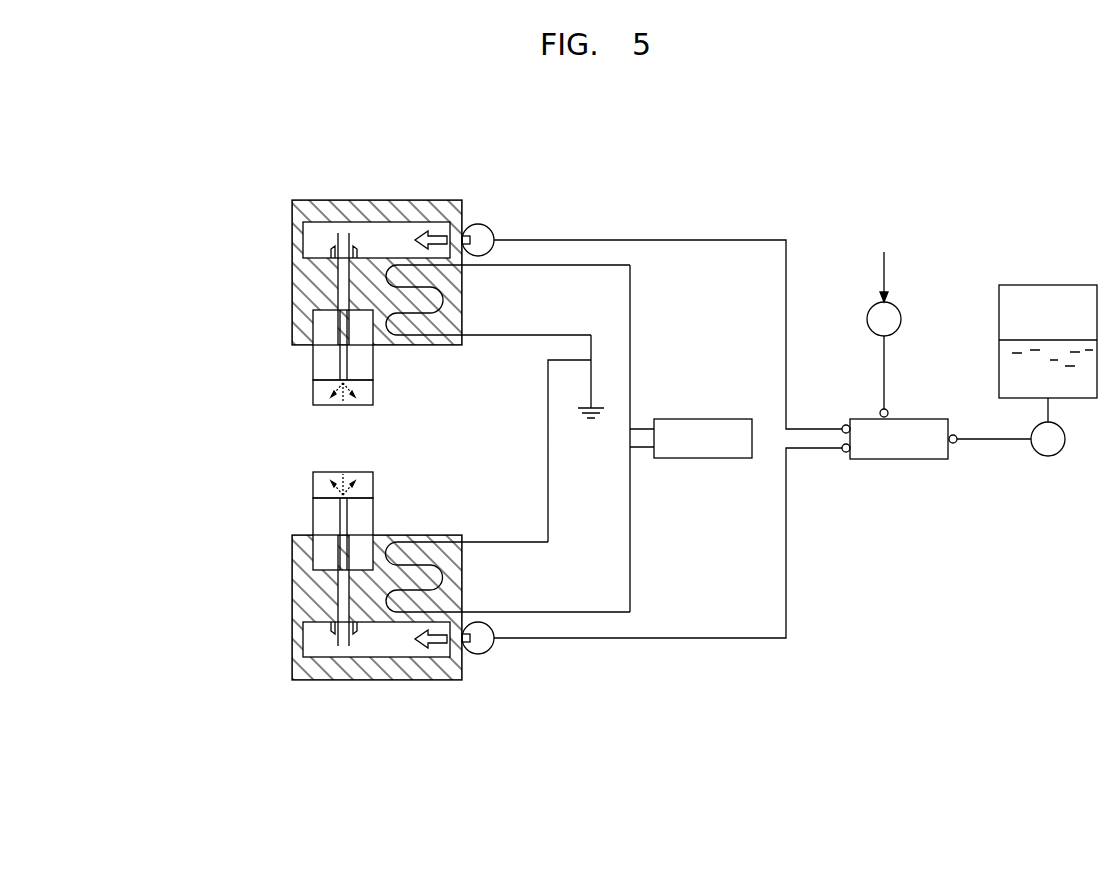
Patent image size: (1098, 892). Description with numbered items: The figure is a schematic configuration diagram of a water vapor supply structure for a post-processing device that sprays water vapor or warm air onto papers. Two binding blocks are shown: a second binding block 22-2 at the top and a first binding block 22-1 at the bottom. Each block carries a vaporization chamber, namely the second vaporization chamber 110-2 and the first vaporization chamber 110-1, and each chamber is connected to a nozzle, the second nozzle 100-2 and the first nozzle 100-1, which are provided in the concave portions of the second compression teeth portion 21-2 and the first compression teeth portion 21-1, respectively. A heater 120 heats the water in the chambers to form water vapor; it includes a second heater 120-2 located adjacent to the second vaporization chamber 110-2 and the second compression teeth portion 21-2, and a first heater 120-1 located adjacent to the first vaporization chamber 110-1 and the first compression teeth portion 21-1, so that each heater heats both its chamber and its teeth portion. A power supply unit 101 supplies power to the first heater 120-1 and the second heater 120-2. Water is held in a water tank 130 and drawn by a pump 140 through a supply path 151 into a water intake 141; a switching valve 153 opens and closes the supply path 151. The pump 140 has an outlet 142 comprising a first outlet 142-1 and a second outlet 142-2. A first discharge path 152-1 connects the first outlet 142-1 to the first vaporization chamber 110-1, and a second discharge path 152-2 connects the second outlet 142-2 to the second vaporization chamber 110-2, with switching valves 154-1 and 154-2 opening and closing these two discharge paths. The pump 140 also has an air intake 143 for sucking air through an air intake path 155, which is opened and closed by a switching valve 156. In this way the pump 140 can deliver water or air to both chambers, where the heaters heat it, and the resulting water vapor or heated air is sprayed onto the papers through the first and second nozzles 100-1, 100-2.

The second binding block 22-2 is at (335, 269).
The first binding block 22-1 is at (301, 608).
The second vaporization chamber 110-2 is at (372, 232).
The first vaporization chamber 110-1 is at (380, 645).
The second nozzle 100-2 is at (343, 355).
The first nozzle 100-1 is at (343, 517).
The second compression teeth portion 21-2 is at (313, 392).
The first compression teeth portion 21-1 is at (313, 485).
The heater 120 is at (508, 438).
The second heater 120-2 is at (419, 340).
The first heater 120-1 is at (508, 532).
The power supply unit 101 is at (704, 418).
The switching valve 154-2 is at (490, 228).
The switching valve 154-1 is at (490, 655).
The second discharge path 152-2 is at (745, 236).
The first discharge path 152-1 is at (740, 641).
The pump 140 is at (917, 418).
The outlet 142 is at (874, 500).
The first outlet 142-1 is at (852, 458).
The second outlet 142-2 is at (839, 488).
The air intake 143 is at (879, 410).
The water intake 141 is at (956, 433).
The supply path 151 is at (994, 443).
The switching valve 153 is at (1048, 458).
The water tank 130 is at (1048, 283).
The switching valve 156 is at (896, 308).
The air intake path 155 is at (885, 368).